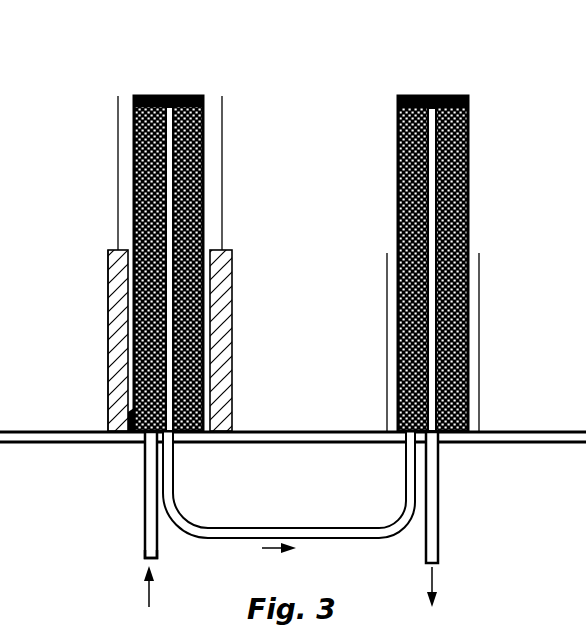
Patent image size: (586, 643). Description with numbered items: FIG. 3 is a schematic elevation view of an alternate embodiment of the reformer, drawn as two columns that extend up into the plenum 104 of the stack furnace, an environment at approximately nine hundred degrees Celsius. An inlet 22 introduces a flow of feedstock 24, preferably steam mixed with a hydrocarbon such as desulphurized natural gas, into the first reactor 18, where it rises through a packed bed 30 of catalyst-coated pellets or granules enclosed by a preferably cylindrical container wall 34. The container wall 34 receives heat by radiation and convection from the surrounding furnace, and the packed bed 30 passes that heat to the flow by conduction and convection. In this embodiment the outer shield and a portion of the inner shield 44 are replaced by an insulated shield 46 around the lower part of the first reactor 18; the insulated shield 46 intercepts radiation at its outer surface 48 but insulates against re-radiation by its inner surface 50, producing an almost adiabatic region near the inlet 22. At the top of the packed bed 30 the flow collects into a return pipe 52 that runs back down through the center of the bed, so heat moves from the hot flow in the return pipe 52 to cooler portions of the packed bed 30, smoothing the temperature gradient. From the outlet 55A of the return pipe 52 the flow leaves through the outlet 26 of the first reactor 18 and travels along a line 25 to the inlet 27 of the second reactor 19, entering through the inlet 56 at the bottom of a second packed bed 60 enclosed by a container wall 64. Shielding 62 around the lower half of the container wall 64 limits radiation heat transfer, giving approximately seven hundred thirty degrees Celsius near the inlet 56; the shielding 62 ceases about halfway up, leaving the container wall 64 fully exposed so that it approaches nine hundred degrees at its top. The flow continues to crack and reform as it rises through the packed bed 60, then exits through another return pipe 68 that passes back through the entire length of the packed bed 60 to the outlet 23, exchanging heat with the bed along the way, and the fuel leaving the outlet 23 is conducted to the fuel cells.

The first reactor 18 is at (136, 90).
The second reactor 19 is at (403, 90).
The inlet 22 is at (145, 508).
The outlet 23 is at (441, 510).
The feedstock 24 is at (150, 538).
The line 25 is at (246, 540).
The outlet 26 is at (174, 457).
The inlet 27 is at (406, 498).
The packed bed 30 is at (190, 96).
The container wall 34 is at (134, 145).
The inner shield 44 is at (118, 233).
The insulated shield 46 is at (118, 348).
The outer surface 48 is at (109, 393).
The inner surface 50 is at (132, 443).
The return pipe 52 is at (167, 178).
The outlet 55A is at (170, 97).
The inlet 56 is at (410, 441).
The packed bed 60 is at (460, 96).
The shielding 62 is at (480, 365).
The container wall 64 is at (468, 158).
The return pipe 68 is at (468, 224).
The plenum 104 is at (298, 195).